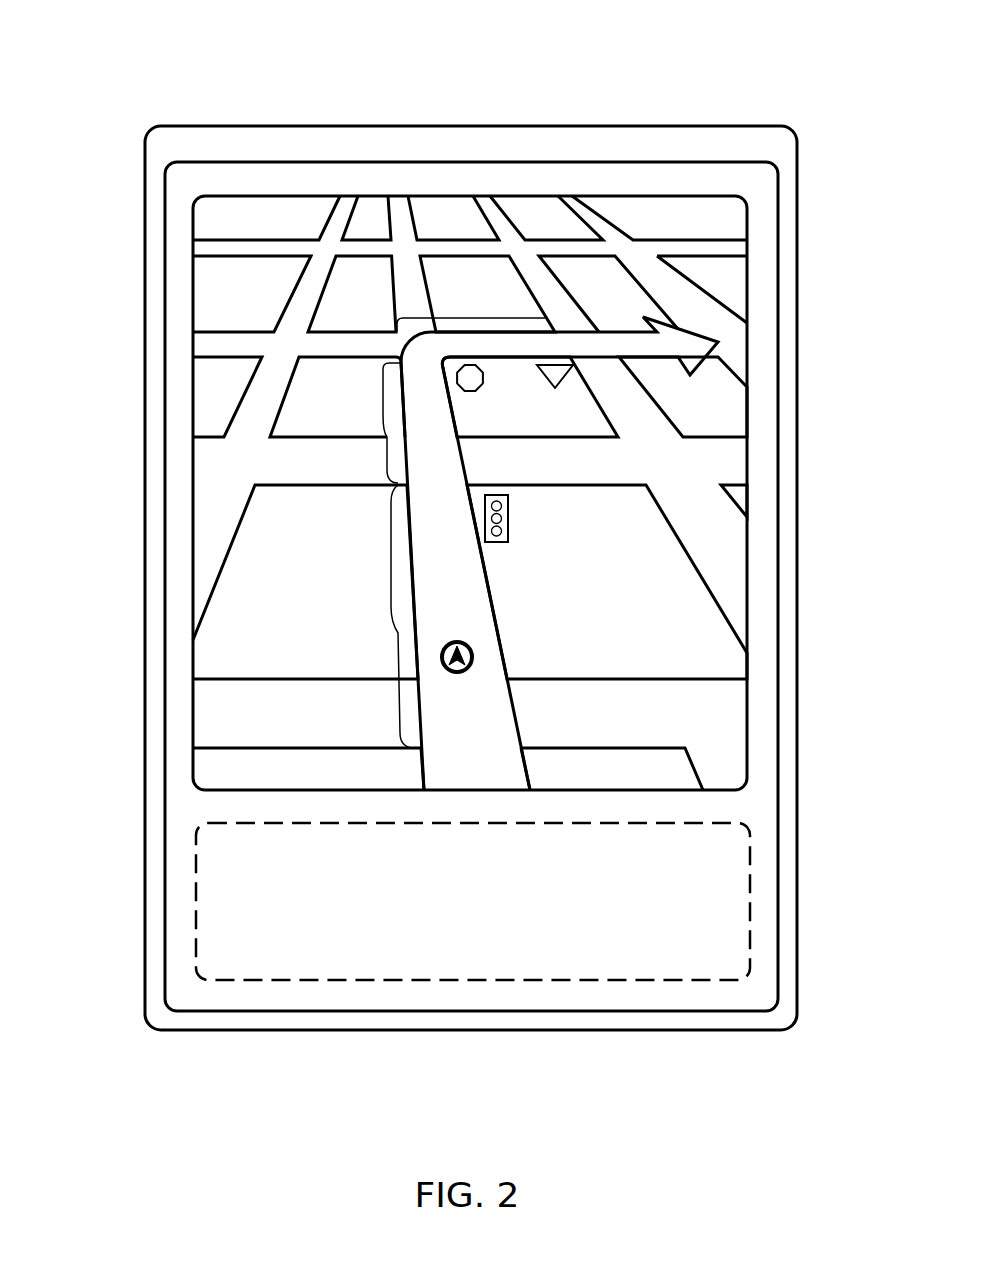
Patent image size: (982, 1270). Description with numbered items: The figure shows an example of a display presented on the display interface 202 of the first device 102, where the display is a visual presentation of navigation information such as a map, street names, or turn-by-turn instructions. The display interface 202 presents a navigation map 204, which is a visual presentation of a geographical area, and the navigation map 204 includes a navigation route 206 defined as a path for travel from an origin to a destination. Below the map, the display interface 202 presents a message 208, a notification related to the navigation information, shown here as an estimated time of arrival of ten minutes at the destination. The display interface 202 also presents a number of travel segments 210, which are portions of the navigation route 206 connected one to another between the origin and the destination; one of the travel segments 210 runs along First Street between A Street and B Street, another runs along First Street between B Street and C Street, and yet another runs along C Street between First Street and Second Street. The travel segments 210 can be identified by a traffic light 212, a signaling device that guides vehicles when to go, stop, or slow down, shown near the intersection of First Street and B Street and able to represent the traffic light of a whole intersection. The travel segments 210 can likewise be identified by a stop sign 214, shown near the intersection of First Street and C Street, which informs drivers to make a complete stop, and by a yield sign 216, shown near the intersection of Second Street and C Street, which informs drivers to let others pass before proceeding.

The first device 102 is at (160, 58).
The display interface 202 is at (780, 1058).
The navigation map 204 is at (131, 199).
The navigation route 206 is at (468, 757).
The message 208 is at (131, 824).
The travel segments 210 is at (390, 622).
The traffic light 212 is at (508, 537).
The stop sign 214 is at (470, 378).
The yield sign 216 is at (557, 378).